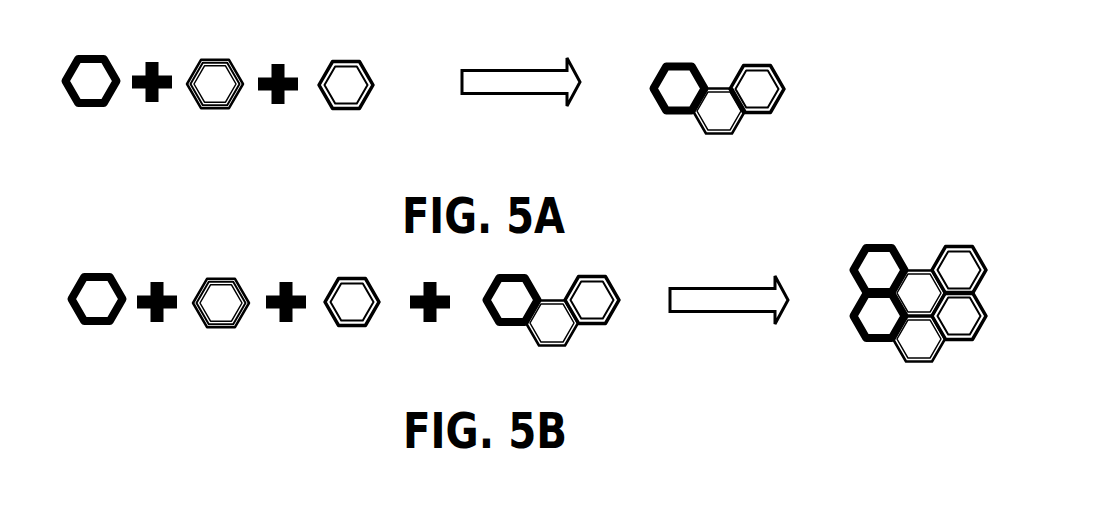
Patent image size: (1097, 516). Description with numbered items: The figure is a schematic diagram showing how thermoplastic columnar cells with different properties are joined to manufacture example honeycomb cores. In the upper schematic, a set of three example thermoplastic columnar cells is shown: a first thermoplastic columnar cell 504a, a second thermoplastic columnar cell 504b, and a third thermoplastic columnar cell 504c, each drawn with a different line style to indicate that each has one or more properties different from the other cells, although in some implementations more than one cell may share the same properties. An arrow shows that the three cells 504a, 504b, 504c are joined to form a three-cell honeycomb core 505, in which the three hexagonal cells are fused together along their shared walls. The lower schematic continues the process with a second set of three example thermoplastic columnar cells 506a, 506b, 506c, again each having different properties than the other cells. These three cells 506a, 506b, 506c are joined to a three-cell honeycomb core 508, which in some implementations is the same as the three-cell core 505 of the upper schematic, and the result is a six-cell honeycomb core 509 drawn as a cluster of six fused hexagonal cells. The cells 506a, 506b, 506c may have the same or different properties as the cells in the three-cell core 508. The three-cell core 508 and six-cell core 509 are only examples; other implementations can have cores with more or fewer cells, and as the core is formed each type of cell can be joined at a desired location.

In FIG. 5A, the first thermoplastic columnar cell 504a is at (104, 108).
In FIG. 5A, the second thermoplastic columnar cell 504b is at (230, 60).
In FIG. 5A, the third thermoplastic columnar cell 504c is at (360, 110).
In FIG. 5A, the 3-cell honeycomb core 505 is at (740, 40).
In FIG. 5B, the thermoplastic columnar cell 506a is at (110, 326).
In FIG. 5B, the thermoplastic columnar cell 506b is at (236, 279).
In FIG. 5B, the thermoplastic columnar cell 506c is at (366, 327).
In FIG. 5B, the 3-cell honeycomb core 508 is at (586, 362).
In FIG. 5B, the 6-cell honeycomb core 509 is at (969, 225).